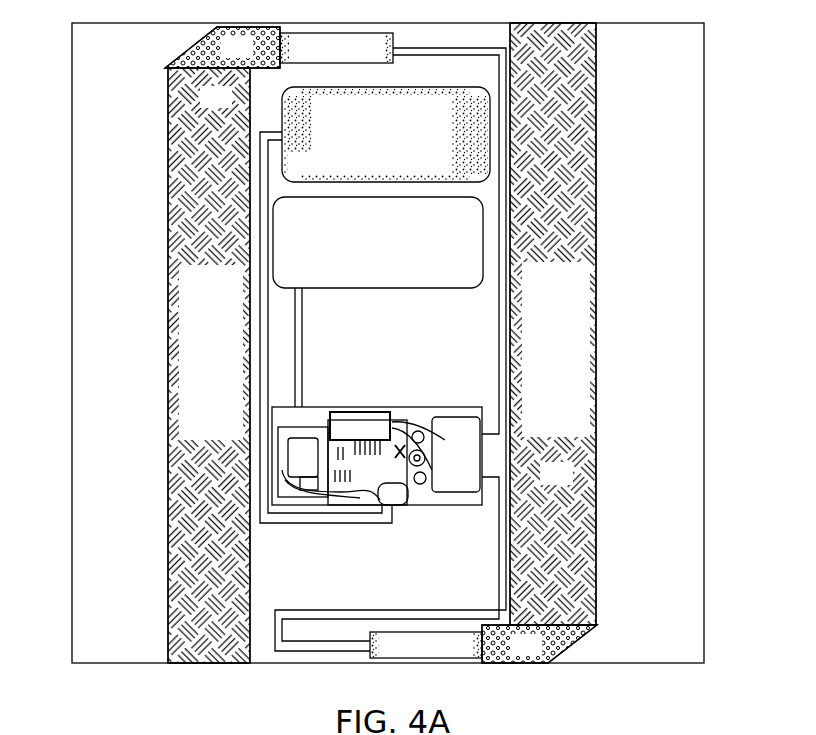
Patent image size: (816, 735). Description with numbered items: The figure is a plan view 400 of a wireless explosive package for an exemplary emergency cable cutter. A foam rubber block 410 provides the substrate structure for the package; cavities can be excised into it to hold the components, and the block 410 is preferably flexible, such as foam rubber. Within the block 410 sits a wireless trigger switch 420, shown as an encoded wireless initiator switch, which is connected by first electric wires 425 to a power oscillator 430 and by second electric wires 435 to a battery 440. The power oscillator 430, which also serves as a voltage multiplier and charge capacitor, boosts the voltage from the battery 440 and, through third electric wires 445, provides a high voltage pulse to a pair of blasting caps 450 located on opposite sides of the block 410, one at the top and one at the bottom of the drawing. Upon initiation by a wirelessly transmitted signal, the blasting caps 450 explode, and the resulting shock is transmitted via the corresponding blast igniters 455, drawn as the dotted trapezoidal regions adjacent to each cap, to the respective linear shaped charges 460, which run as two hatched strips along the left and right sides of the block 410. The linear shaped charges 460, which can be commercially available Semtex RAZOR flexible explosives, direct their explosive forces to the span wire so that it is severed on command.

The plan view 400 is at (405, 374).
The foam rubber block 410 is at (72, 122).
The wireless trigger switch 420 is at (318, 173).
The first electric wires 425 is at (260, 237).
The power oscillator 430 is at (386, 480).
The second electric wires 435 is at (303, 352).
The battery 440 is at (466, 280).
The third electric wires 445 is at (452, 55).
The blasting caps 450 is at (312, 64).
The blast igniters 455 is at (251, 58).
The linear shaped charges 460 is at (231, 108).